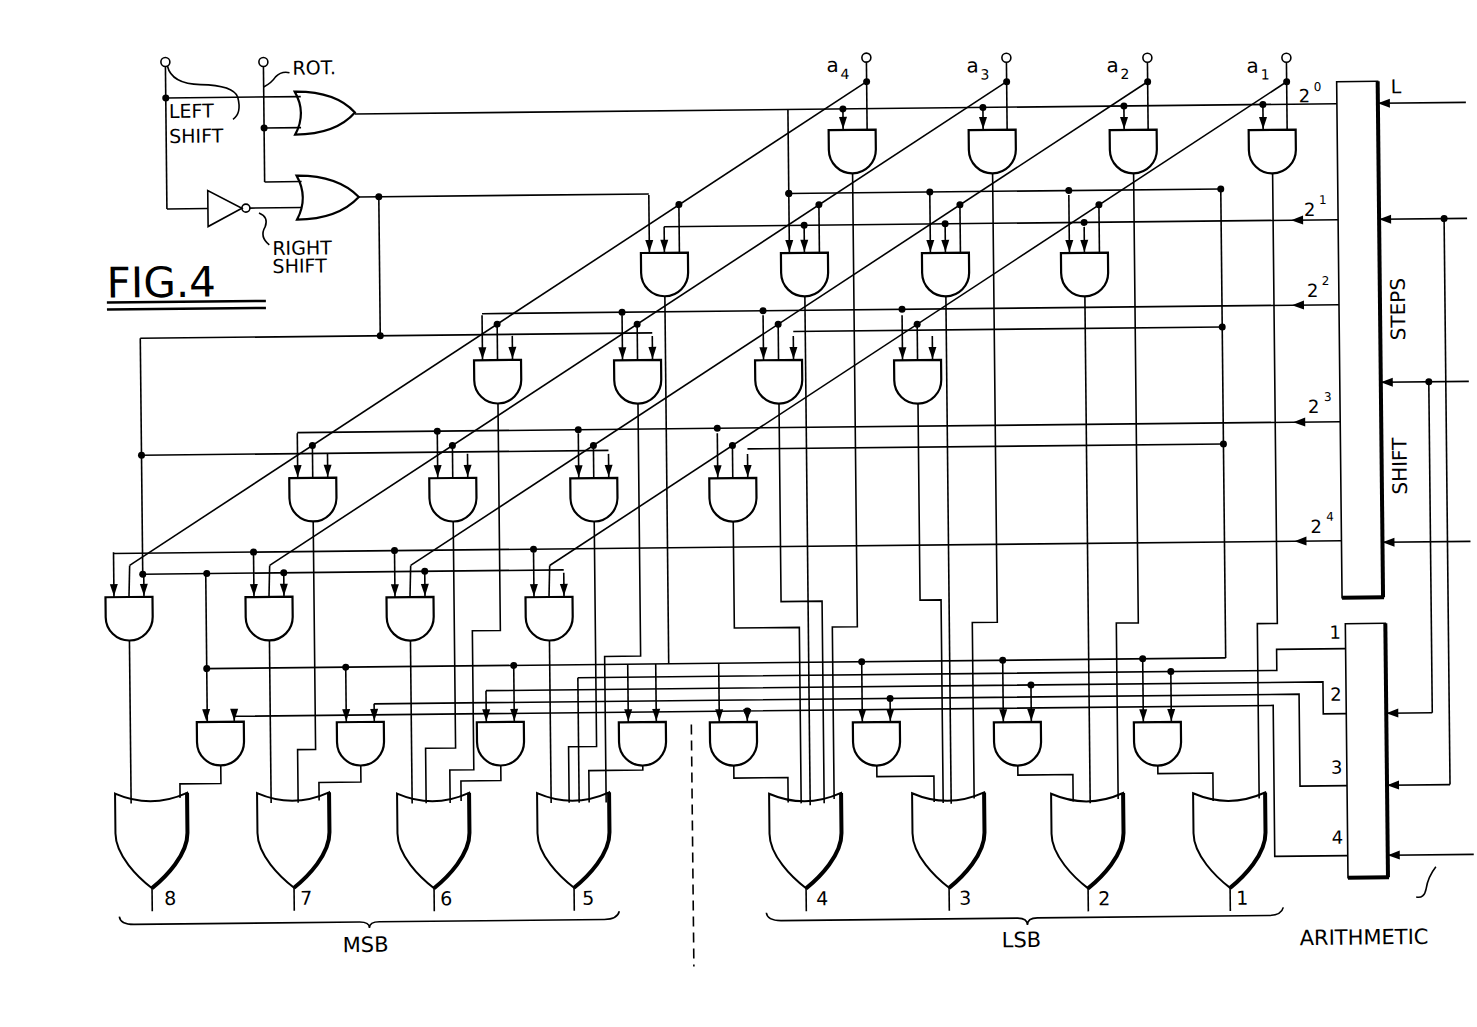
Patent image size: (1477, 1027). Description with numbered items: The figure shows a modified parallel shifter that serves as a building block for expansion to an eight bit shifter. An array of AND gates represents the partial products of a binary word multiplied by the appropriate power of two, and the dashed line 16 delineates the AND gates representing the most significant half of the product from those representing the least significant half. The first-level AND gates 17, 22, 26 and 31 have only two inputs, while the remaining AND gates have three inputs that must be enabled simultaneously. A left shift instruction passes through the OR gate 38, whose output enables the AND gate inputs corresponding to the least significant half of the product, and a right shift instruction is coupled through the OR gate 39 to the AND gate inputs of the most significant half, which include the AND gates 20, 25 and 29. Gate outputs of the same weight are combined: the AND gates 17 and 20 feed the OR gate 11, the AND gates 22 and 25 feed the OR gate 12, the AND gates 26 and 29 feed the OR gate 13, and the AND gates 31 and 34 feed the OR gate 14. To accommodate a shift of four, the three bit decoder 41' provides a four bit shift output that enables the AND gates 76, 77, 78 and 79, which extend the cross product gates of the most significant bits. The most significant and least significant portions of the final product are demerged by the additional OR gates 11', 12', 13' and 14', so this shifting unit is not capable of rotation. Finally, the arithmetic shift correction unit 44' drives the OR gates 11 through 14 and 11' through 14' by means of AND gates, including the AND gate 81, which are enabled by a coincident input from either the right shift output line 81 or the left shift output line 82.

The OR gate 38 is at (352, 98).
The OR gate 39 is at (330, 176).
The AND gate 31 is at (833, 170).
The AND gate 26 is at (972, 157).
The AND gate 22 is at (1113, 150).
The AND gate 17 is at (1252, 148).
The AND gate 29 is at (288, 513).
The AND gate 25 is at (428, 514).
The AND gate 20 is at (570, 513).
The AND gate 34 is at (714, 500).
The AND gate 79 is at (150, 626).
The AND gate 78 is at (246, 618).
The AND gate 77 is at (386, 618).
The AND gate 76 is at (528, 630).
The right shift output line 81 is at (222, 672).
The left shift output line 82 is at (900, 663).
The three bit decoder 41' is at (1380, 325).
The arithmetic shift correction unit 44' is at (1345, 737).
The OR gate 14' is at (178, 851).
The OR gate 13' is at (317, 851).
The OR gate 12' is at (459, 851).
The OR gate 11' is at (603, 851).
The OR gate 14 is at (828, 851).
The OR gate 13 is at (966, 851).
The OR gate 12 is at (1107, 852).
The OR gate 11 is at (1214, 852).
The dashed line 16 is at (692, 880).